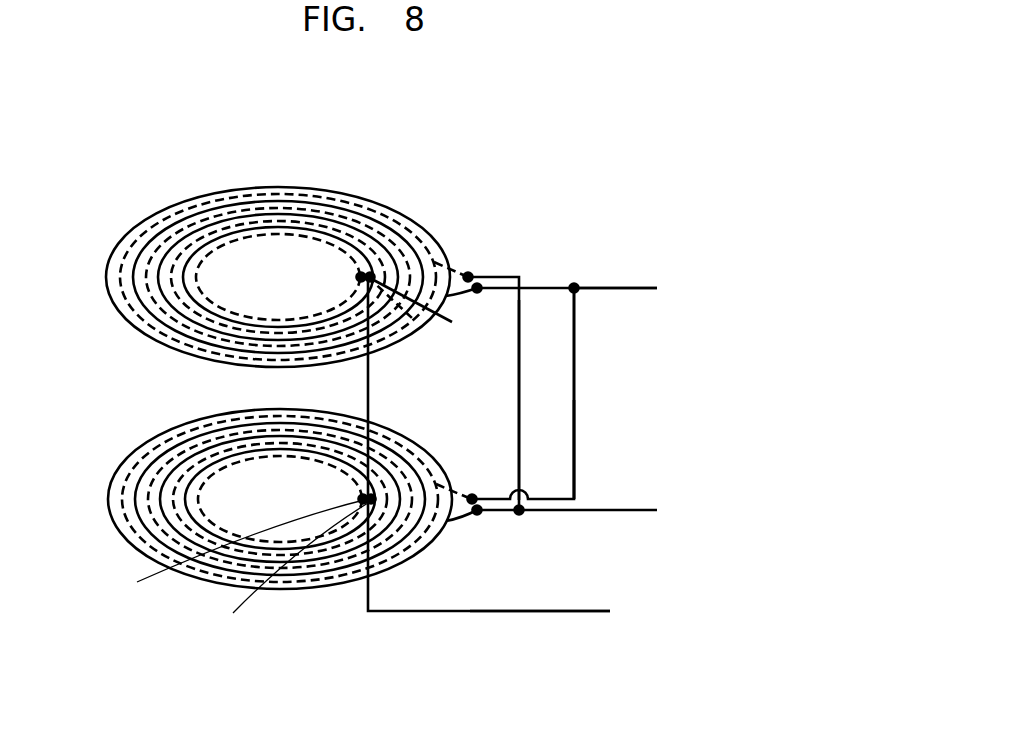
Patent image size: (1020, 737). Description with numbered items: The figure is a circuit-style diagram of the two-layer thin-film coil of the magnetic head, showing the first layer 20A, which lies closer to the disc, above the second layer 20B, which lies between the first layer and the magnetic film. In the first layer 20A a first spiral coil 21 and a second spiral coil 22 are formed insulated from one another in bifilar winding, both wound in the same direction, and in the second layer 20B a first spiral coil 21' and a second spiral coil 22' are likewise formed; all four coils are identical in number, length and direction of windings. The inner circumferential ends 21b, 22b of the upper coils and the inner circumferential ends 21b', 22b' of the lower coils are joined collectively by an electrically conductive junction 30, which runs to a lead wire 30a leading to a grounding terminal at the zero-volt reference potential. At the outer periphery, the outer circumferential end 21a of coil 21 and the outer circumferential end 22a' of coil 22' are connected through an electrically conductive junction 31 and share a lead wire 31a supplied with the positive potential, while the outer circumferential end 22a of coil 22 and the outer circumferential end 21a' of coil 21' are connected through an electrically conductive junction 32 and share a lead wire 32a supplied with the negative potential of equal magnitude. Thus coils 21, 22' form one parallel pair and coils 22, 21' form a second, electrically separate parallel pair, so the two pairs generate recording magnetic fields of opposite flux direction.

The first layer 20A is at (127, 168).
The second layer 20B is at (110, 438).
The first spiral coil 21 is at (291, 250).
The second spiral coil 22 is at (294, 248).
The first spiral coil 21' is at (292, 477).
The second spiral coil 22' is at (297, 474).
The outer circumferential end 21a is at (590, 251).
The outer circumferential end 22a is at (488, 354).
The inner circumferential end 21b is at (434, 334).
The inner circumferential end 22b is at (404, 349).
The outer circumferential end 21a' is at (593, 531).
The outer circumferential end 22a' is at (510, 443).
The inner circumferential end 21b' is at (288, 574).
The inner circumferential end 22b' is at (232, 556).
The electrically conductive junction 30 is at (367, 383).
The lead wire 30a is at (493, 613).
The electrically conductive junction 31 is at (575, 378).
The lead wire 31a is at (593, 287).
The electrically conductive junction 32 is at (519, 432).
The lead wire 32a is at (614, 508).